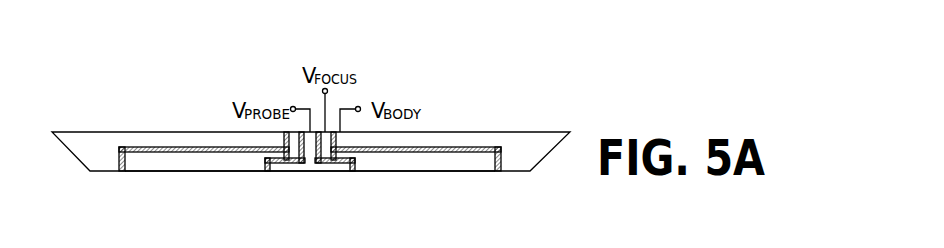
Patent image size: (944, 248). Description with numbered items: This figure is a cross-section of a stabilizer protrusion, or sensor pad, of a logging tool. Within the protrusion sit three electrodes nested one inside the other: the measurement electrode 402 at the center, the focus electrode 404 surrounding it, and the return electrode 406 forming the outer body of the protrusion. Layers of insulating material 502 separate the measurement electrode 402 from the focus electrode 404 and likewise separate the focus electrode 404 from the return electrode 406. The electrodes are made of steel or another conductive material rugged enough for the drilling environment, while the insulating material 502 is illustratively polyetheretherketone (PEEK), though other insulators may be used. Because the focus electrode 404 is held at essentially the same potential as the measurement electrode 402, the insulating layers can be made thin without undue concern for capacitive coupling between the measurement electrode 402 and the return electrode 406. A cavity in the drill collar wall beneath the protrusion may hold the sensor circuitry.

The measurement electrode 402 is at (295, 173).
The focus electrode 404 is at (175, 172).
The return electrode 406 is at (85, 172).
The insulating material 502 is at (388, 177).